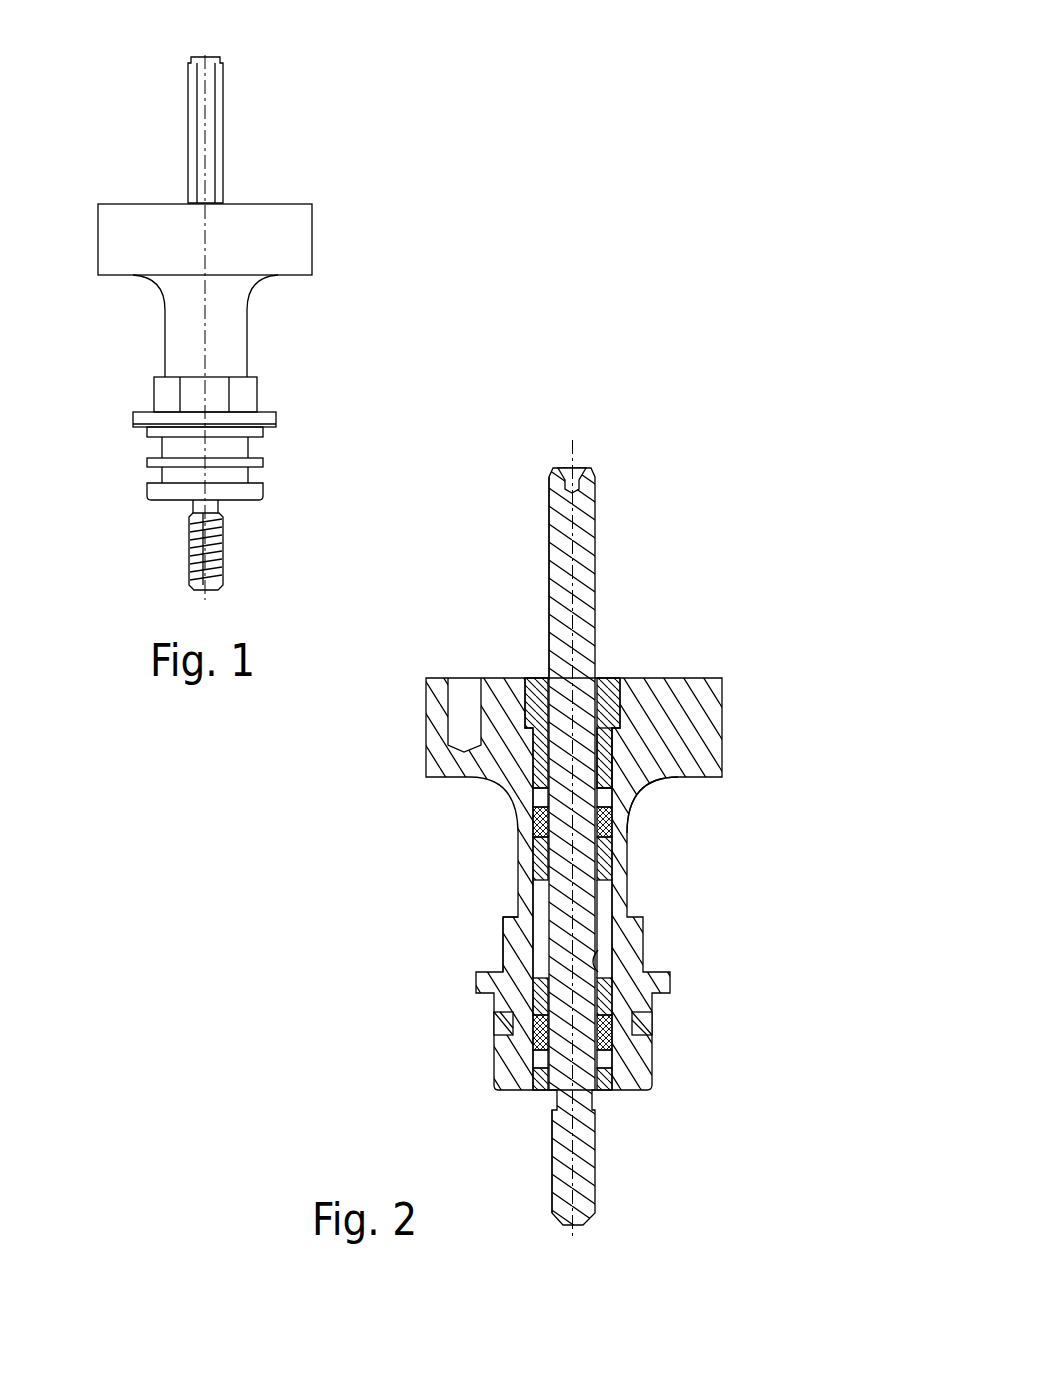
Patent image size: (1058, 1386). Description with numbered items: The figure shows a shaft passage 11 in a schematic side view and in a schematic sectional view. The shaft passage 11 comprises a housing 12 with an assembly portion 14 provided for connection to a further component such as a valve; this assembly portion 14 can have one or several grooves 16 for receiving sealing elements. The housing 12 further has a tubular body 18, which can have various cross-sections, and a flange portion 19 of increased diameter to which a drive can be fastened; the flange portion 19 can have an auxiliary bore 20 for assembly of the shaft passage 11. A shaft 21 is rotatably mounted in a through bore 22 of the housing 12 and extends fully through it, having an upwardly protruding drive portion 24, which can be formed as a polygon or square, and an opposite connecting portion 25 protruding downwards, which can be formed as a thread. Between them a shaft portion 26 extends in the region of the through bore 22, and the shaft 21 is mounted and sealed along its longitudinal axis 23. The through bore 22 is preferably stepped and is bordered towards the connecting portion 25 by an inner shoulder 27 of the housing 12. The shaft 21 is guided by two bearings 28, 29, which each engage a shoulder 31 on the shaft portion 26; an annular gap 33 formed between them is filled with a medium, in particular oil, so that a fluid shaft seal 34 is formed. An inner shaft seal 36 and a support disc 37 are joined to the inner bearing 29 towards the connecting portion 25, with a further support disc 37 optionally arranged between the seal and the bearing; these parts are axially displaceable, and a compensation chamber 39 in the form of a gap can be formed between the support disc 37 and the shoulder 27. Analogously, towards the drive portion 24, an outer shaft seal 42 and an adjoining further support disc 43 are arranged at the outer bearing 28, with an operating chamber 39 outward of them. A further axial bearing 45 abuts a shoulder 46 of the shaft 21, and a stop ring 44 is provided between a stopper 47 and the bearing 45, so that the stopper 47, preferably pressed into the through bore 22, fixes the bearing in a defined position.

In FIG. 1, the shaft passage 11 is at (300, 158).
In FIG. 1, the housing 12 is at (335, 272).
In FIG. 1, the assembly portion 14 is at (293, 455).
In FIG. 2, the assembly portion 14 is at (683, 1042).
In FIG. 1, the grooves 16 is at (150, 475).
In FIG. 1, the tubular body 18 is at (268, 340).
In FIG. 1, the flange portion 19 is at (118, 245).
In FIG. 2, the auxiliary bore 20 is at (462, 700).
In FIG. 1, the shaft 21 is at (242, 66).
In FIG. 2, the shaft 21 is at (624, 602).
In FIG. 2, the through bore 22 is at (615, 887).
In FIG. 2, the longitudinal axis 23 is at (578, 450).
In FIG. 1, the drive portion 24 is at (227, 128).
In FIG. 2, the drive portion 24 is at (560, 545).
In FIG. 1, the connecting portion 25 is at (238, 556).
In FIG. 2, the connecting portion 25 is at (625, 1165).
In FIG. 2, the shaft portion 26 is at (550, 903).
In FIG. 2, the inner shoulder 27 is at (533, 1090).
In FIG. 2, the outer bearing 28 is at (620, 862).
In FIG. 2, the inner bearing 29 is at (613, 1000).
In FIG. 2, the shoulder 31 is at (600, 957).
In FIG. 2, the annular gap 33 is at (528, 940).
In FIG. 2, the fluid shaft seal 34 is at (514, 914).
In FIG. 2, the inner shaft seal 36 is at (530, 1040).
In FIG. 2, the support disc 37 is at (497, 1020).
In FIG. 2, the compensation chamber 39 is at (533, 800).
In FIG. 2, the outer shaft seal 42 is at (524, 835).
In FIG. 2, the further support disc 43 is at (532, 815).
In FIG. 2, the stop ring 44 is at (615, 737).
In FIG. 2, the axial bearing 45 is at (614, 767).
In FIG. 2, the shoulder 46 is at (608, 792).
In FIG. 2, the stopper 47 is at (522, 690).